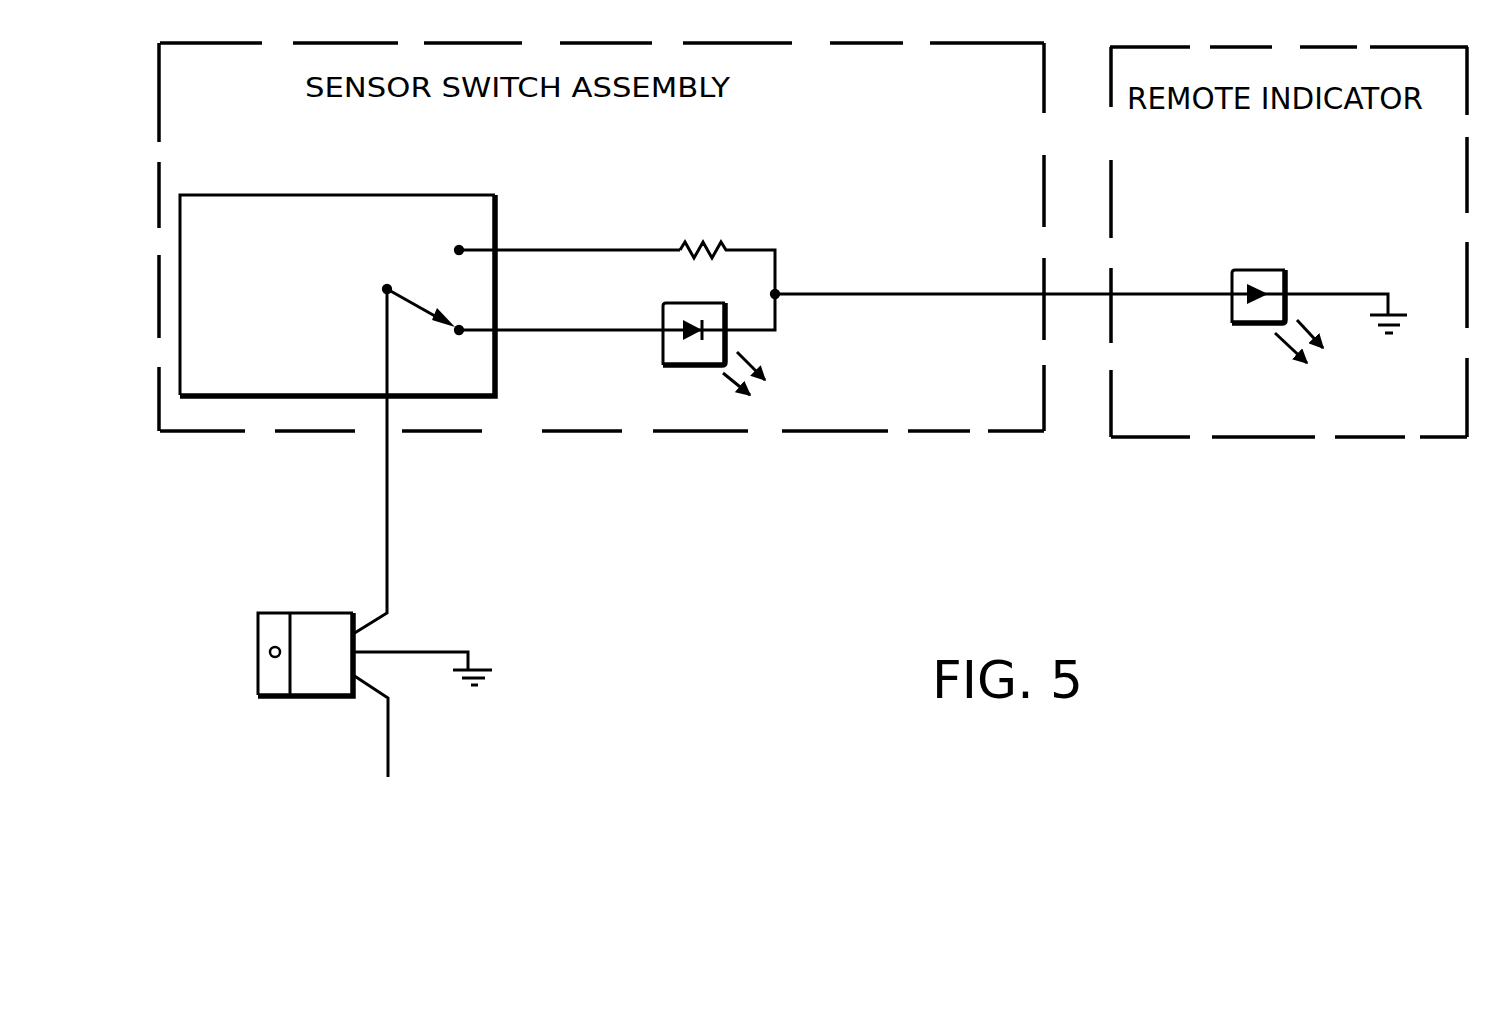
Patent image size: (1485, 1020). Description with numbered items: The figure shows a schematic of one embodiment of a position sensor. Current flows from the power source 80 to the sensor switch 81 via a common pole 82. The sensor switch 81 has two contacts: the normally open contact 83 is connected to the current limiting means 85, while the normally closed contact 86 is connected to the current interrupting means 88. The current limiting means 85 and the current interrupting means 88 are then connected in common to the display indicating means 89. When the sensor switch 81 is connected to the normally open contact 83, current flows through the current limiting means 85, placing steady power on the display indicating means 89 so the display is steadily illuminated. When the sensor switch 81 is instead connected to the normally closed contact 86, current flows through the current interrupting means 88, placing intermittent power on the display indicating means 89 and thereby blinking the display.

The power source 80 is at (268, 698).
The sensor switch 81 is at (337, 295).
The common pole 82 is at (388, 534).
The normally open contact 83 is at (462, 252).
The current limiting means 85 is at (690, 258).
The normally closed contact 86 is at (462, 328).
The current interrupting means 88 is at (663, 318).
The display indicating means 89 is at (1252, 270).